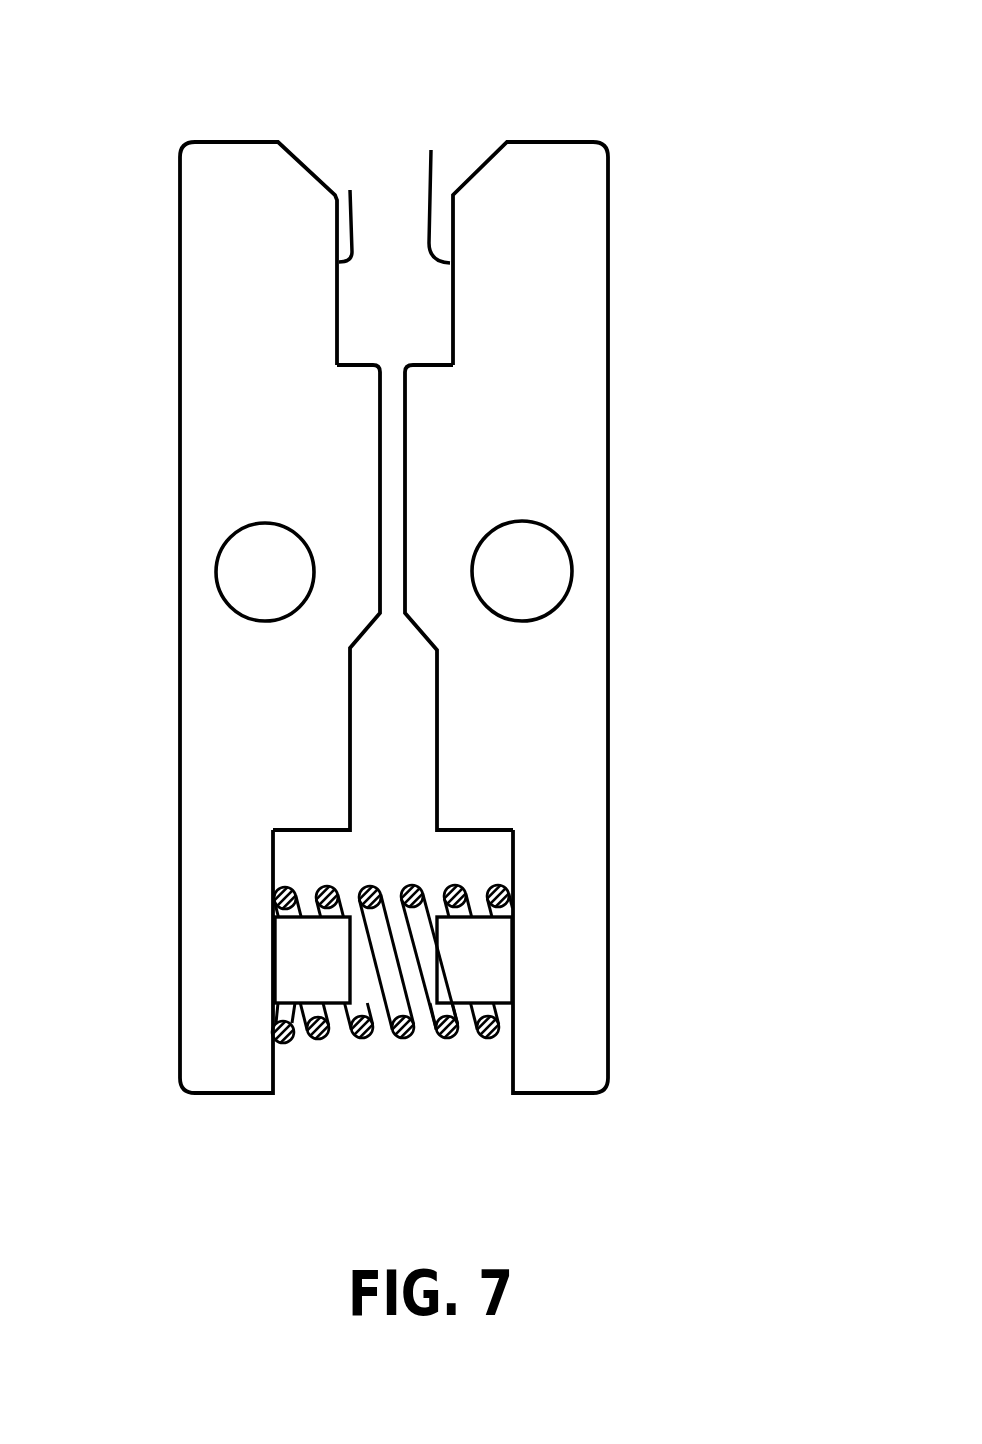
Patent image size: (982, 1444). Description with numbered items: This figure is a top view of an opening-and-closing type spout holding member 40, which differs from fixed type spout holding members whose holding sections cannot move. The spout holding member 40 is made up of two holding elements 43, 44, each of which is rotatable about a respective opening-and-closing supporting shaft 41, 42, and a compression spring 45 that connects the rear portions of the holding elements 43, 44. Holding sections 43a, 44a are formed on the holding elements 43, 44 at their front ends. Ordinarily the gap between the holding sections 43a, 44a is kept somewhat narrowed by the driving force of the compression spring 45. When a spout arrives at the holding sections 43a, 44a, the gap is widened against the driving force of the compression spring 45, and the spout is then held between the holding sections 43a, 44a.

The opening-and-closing type spout holding member 40 is at (455, 617).
The opening-and-closing supporting shaft 41 is at (243, 576).
The opening-and-closing supporting shaft 42 is at (548, 578).
The holding element 43 is at (215, 305).
The holding section 43a is at (350, 190).
The holding element 44 is at (572, 280).
The holding section 44a is at (431, 150).
The compression spring 45 is at (362, 1037).